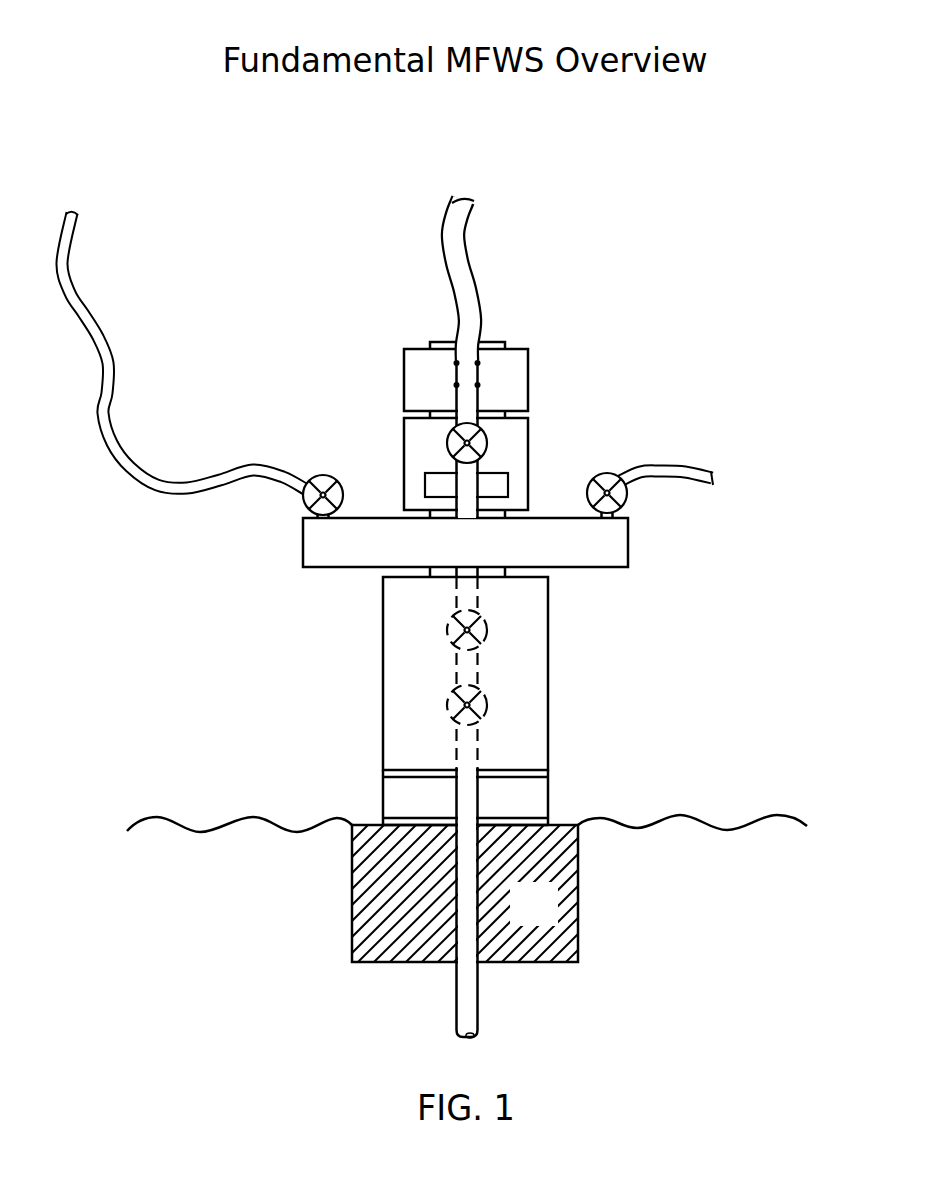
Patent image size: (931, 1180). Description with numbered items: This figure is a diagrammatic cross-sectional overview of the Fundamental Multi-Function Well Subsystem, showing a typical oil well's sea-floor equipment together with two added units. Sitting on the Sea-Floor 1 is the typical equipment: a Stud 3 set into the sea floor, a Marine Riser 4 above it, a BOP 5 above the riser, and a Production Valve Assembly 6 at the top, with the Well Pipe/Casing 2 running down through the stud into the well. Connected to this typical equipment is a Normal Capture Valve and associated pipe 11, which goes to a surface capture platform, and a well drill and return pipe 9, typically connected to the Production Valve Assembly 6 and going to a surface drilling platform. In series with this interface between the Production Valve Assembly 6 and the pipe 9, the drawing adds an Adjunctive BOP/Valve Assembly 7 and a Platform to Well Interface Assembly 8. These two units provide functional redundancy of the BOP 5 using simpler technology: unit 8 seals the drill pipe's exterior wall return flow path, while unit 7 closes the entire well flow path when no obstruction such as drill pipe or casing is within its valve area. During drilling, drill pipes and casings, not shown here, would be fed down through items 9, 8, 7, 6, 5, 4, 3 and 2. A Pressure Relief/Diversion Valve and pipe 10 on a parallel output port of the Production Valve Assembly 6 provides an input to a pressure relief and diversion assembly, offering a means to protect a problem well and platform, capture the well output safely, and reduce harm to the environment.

The Sea-Floor 1 is at (426, 835).
The Well Pipe/Casing 2 is at (520, 913).
The Stud 3 is at (465, 893).
The Marine Riser 4 is at (465, 797).
The BOP 5 is at (465, 673).
The Production Valve Assembly 6 is at (465, 547).
The Adjunctive BOP/Valve Assembly (AVA) 7 is at (386, 444).
The Platform to Well Interface Assembly (P-WIA) 8 is at (550, 372).
The well drill & return pipe 9 is at (467, 346).
The Pressure Relief/Diversion Valve & Pipe/Tube 10 is at (667, 494).
The Normal Capture Valve & Associated pipe 11 is at (202, 354).